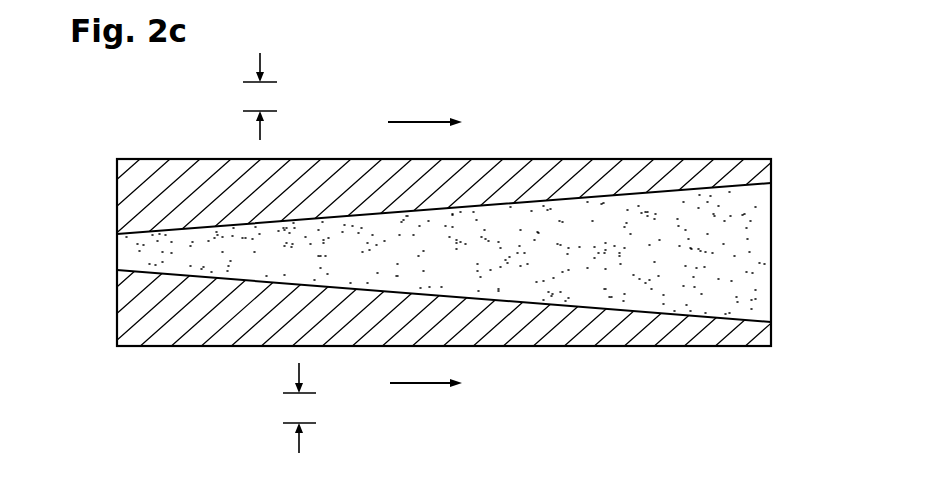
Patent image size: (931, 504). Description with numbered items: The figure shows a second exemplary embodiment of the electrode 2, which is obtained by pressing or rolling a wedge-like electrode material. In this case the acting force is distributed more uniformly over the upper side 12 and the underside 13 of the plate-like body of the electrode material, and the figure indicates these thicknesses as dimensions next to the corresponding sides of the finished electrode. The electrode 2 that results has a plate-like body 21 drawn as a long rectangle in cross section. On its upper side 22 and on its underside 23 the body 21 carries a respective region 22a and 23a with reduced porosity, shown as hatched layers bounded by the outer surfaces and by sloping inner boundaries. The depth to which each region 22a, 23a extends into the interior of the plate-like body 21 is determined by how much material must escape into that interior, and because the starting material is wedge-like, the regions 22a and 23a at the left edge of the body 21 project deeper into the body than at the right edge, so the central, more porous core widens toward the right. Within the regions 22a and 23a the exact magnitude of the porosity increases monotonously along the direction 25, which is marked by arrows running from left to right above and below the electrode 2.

The electrode 2 is at (728, 102).
The plate-like body 21 is at (117, 314).
The upper side 22 is at (190, 155).
The upper side 12 is at (260, 96).
The underside 23 is at (219, 354).
The underside 13 is at (299, 408).
The region with reduced porosity 22a is at (603, 160).
The region with reduced porosity 23a is at (600, 347).
The direction 25 is at (418, 122).